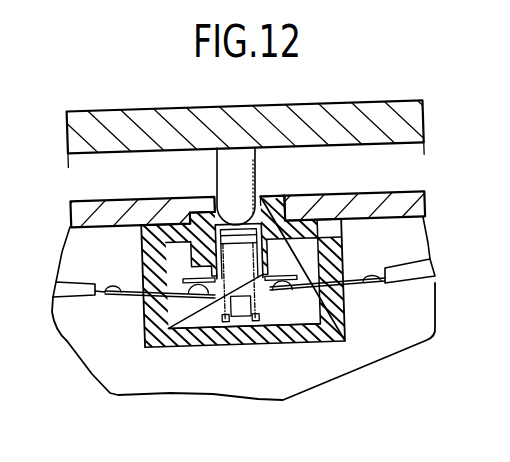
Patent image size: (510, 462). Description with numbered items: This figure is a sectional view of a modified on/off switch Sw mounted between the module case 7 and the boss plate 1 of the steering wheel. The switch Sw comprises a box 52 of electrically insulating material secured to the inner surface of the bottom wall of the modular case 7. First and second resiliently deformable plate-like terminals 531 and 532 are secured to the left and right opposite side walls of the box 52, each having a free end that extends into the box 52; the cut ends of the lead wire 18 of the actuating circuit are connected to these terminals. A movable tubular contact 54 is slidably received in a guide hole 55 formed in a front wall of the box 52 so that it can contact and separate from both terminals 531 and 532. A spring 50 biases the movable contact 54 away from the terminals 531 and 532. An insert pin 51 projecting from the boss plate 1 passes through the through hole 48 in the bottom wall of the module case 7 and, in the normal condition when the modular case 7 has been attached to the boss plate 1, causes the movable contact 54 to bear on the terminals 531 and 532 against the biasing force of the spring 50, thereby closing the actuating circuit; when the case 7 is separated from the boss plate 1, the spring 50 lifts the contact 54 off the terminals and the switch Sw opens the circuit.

The boss plate 1 is at (413, 124).
The module case 7 is at (368, 191).
The lead wire 18 is at (83, 293).
The through hole 48 is at (207, 200).
The spring 50 is at (225, 330).
The insert pin 51 is at (242, 179).
The box 52 is at (313, 330).
The first plate-like terminal 531 is at (156, 306).
The second plate-like terminal 532 is at (310, 289).
The movable tubular contact 54 is at (199, 280).
The guide hole 55 is at (263, 210).
The on/off switch Sw is at (265, 386).